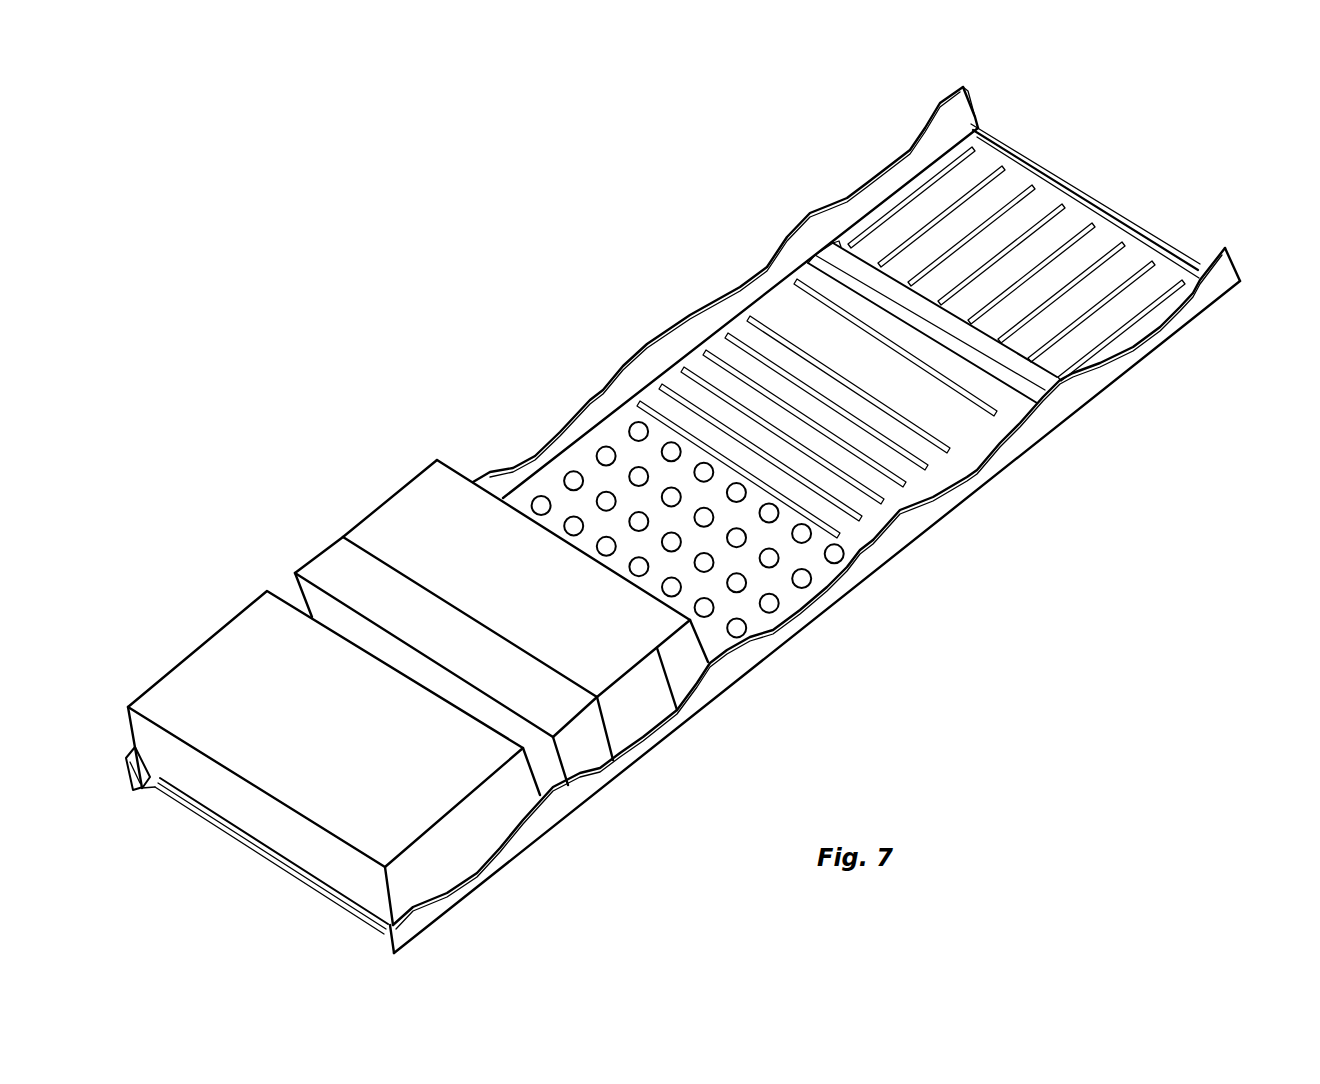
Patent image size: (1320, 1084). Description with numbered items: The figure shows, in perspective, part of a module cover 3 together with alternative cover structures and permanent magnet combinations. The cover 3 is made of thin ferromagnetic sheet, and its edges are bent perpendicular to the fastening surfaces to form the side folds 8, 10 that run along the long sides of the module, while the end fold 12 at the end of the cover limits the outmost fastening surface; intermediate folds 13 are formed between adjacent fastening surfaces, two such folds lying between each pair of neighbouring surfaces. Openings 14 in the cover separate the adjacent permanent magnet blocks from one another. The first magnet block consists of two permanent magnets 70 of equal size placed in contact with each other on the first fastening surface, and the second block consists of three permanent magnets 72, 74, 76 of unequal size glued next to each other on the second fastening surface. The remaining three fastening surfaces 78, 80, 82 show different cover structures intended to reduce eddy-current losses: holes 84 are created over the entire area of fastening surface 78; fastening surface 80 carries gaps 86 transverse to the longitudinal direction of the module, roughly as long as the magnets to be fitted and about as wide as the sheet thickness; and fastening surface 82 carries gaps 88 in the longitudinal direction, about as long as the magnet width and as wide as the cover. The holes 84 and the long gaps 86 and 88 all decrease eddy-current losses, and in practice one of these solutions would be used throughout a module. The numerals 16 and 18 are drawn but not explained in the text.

The module cover 3 is at (1140, 223).
The side fold 8 is at (1063, 403).
The side fold 10 is at (850, 203).
The end fold 12 is at (1018, 155).
The intermediate fold 13 is at (838, 500).
The opening 14 is at (620, 386).
The bottom edge 16 is at (652, 752).
The side wall section 18 is at (597, 792).
The permanent magnet 70 is at (187, 664).
The permanent magnet 72 is at (310, 571).
The permanent magnet 74 is at (348, 540).
The permanent magnet 76 is at (428, 480).
The fastening surface 78 is at (777, 580).
The fastening surface 80 is at (978, 477).
The fastening surface 82 is at (1093, 327).
The hole 84 is at (736, 538).
The transverse gap 86 is at (787, 330).
The longitudinal gap 88 is at (1097, 263).